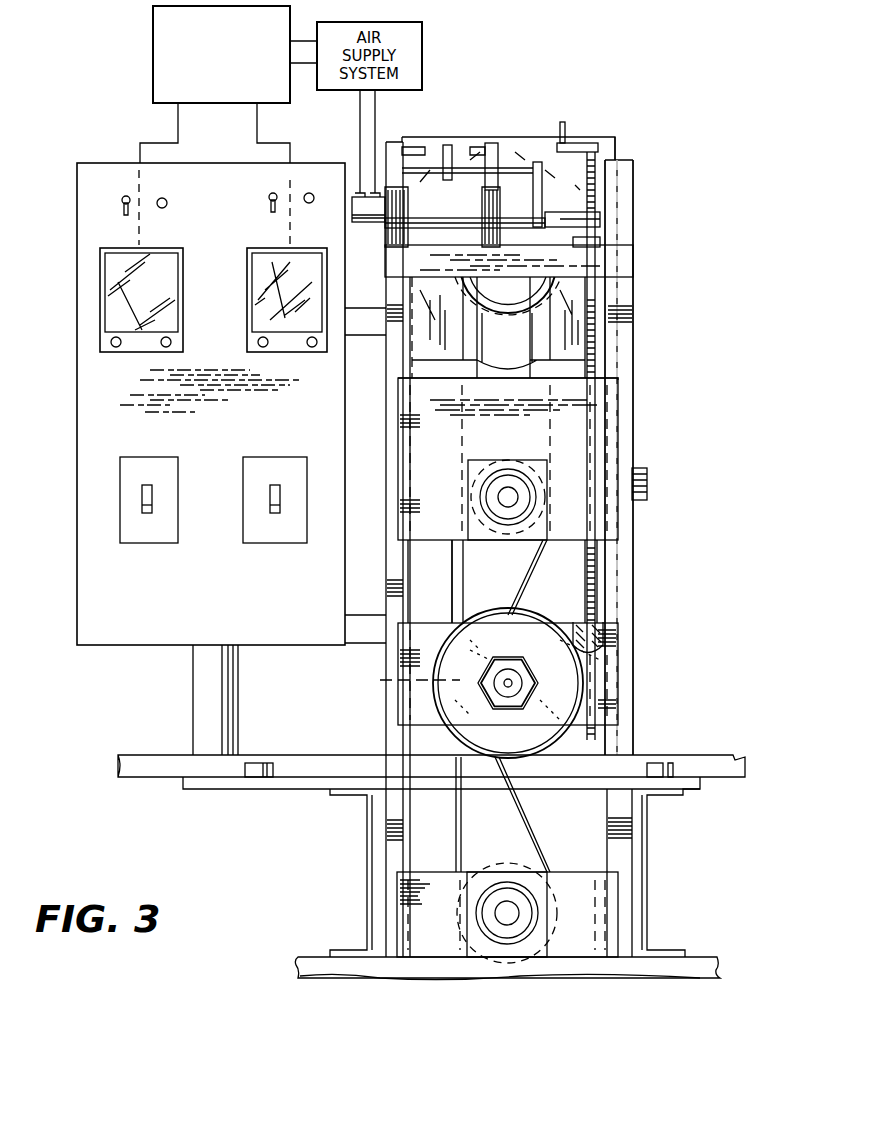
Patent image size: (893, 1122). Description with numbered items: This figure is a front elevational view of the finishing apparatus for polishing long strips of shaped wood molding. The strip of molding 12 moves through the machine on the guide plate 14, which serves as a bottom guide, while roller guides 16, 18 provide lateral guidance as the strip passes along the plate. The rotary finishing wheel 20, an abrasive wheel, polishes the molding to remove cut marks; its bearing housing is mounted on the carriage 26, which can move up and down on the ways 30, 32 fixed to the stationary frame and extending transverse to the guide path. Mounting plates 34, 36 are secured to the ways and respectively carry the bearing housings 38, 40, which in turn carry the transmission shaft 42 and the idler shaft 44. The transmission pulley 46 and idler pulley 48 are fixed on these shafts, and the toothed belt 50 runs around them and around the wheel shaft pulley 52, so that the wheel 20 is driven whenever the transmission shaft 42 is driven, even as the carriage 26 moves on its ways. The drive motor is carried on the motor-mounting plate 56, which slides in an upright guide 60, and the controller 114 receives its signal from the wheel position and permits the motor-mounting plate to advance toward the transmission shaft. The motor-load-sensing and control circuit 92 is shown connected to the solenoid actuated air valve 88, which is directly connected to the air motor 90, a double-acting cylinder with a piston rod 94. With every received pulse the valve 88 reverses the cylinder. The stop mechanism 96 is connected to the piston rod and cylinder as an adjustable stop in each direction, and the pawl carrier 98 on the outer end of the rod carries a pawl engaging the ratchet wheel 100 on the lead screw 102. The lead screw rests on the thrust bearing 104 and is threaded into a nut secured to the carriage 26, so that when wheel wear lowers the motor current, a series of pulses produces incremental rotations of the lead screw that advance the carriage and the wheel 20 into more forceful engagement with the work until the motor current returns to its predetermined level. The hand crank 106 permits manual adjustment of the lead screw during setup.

The molding 12 is at (155, 757).
The guide plate 14 is at (318, 777).
The roller guide 16 is at (260, 763).
The roller guide 18 is at (670, 763).
The rotary finishing wheel 20 is at (562, 700).
The carriage 26 is at (620, 668).
The way 30 is at (386, 706).
The way 32 is at (622, 373).
The mounting plate 34 is at (616, 418).
The mounting plate 36 is at (588, 957).
The bearing housing 38 is at (547, 525).
The bearing housing 40 is at (535, 957).
The transmission shaft 42 is at (508, 507).
The idler shaft 44 is at (505, 925).
The transmission pulley 46 is at (555, 556).
The idler pulley 48 is at (487, 957).
The toothed belt 50 is at (520, 600).
The wheel shaft pulley 52 is at (400, 678).
The motor-mounting plate 56 is at (617, 137).
The upright guide 60 is at (622, 228).
The solenoid actuated air valve 88 is at (368, 222).
The air motor 90 is at (419, 206).
The motor-load-sensing and control circuit 92 is at (153, 68).
The piston rod 94 is at (494, 145).
The stop mechanism 96 is at (448, 145).
The pawl carrier 98 is at (545, 212).
The ratchet wheel 100 is at (600, 222).
The lead screw 102 is at (597, 605).
The thrust bearing 104 is at (598, 240).
The hand crank 106 is at (567, 143).
The controller 114 is at (683, 460).